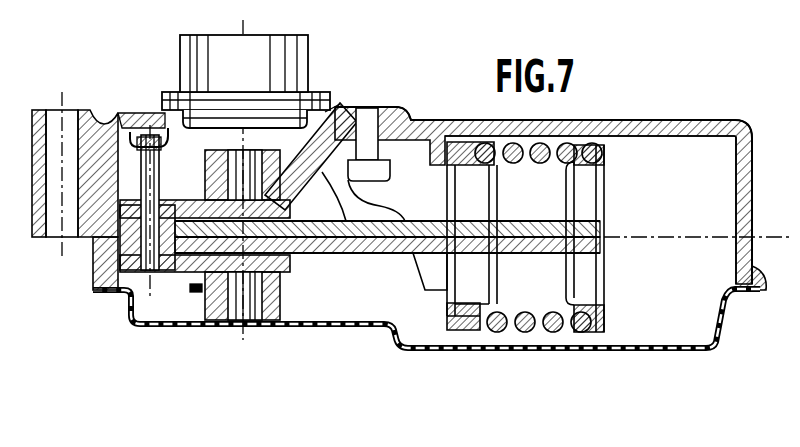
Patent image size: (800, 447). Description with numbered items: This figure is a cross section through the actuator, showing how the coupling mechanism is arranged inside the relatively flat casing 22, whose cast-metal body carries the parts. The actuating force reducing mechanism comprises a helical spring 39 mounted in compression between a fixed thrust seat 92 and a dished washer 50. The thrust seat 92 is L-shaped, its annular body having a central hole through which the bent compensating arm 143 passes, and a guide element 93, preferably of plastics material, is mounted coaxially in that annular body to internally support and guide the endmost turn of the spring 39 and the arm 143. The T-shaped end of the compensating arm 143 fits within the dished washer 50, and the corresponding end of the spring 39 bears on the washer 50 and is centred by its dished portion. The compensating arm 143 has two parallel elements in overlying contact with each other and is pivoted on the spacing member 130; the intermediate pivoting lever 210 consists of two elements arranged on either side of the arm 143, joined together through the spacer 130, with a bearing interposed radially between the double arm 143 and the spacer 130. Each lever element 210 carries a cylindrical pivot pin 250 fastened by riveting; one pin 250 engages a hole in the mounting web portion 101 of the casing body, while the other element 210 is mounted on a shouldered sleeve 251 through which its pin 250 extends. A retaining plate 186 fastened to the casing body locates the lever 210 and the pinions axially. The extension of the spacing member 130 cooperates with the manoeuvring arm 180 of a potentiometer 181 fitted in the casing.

The casing 22 is at (760, 286).
The helical spring 39 is at (553, 334).
The dished washer 50 is at (600, 313).
The fixed thrust seat 92 is at (452, 322).
The guide element 93 is at (485, 312).
The mounting web portion 101 is at (337, 107).
The spacing member 130 is at (150, 278).
The bent compensating arm 143 is at (347, 254).
The manoeuvring arm 180 is at (147, 130).
The potentiometer 181 is at (181, 62).
The retaining plate 186 is at (197, 292).
The intermediate pivoting lever 210 is at (98, 244).
The cylindrical pivot pin 250 is at (298, 258).
The shouldered sleeve 251 is at (243, 325).